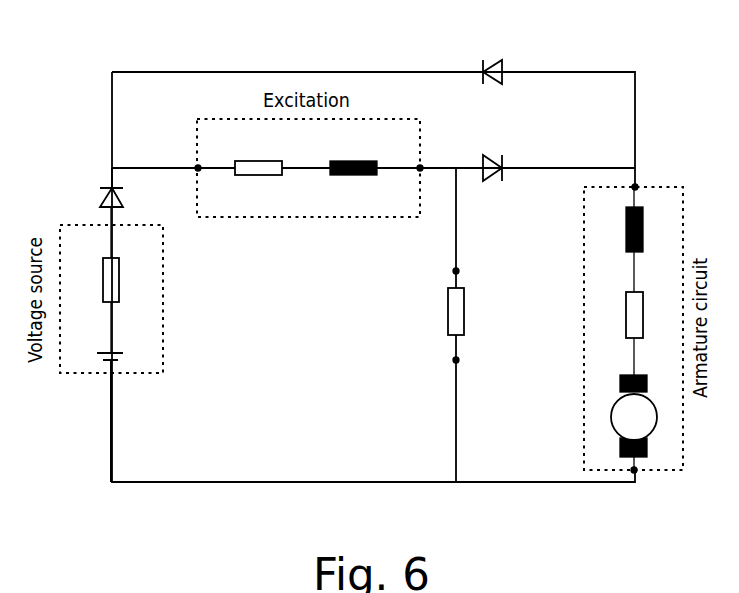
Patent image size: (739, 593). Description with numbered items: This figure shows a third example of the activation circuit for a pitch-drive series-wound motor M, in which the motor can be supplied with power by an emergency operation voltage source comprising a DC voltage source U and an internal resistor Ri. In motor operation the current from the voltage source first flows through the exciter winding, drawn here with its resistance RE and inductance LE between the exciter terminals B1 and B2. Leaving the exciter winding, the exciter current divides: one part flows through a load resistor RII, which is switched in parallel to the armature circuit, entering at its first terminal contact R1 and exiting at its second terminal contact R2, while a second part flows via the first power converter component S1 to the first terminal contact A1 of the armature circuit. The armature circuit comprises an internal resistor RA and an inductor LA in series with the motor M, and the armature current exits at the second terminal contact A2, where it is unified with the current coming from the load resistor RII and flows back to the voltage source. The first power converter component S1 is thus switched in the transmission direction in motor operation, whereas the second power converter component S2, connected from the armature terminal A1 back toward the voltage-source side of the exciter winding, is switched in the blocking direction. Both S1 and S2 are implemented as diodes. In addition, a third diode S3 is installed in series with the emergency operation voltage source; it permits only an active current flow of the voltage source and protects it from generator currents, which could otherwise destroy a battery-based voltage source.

The first power converter component S1 is at (502, 160).
The second power converter component S2 is at (500, 61).
The third diode S3 is at (104, 188).
The first excitation terminal node B1 is at (198, 168).
The second excitation terminal node B2 is at (420, 168).
The first terminal contact of the armature circuit A1 is at (635, 187).
The second terminal contact of the armature winding A2 is at (634, 470).
The first terminal contact of the load resistor R1 is at (481, 255).
The second terminal contact of the load resistor R2 is at (480, 367).
The excitation winding resistance RE is at (258, 185).
The excitation winding inductance LE is at (353, 185).
The internal resistor Ri is at (94, 280).
The DC voltage source U is at (94, 408).
The load resistor RII is at (435, 311).
The inductor LA is at (647, 239).
The internal resistor RA is at (648, 333).
The motor M is at (634, 422).